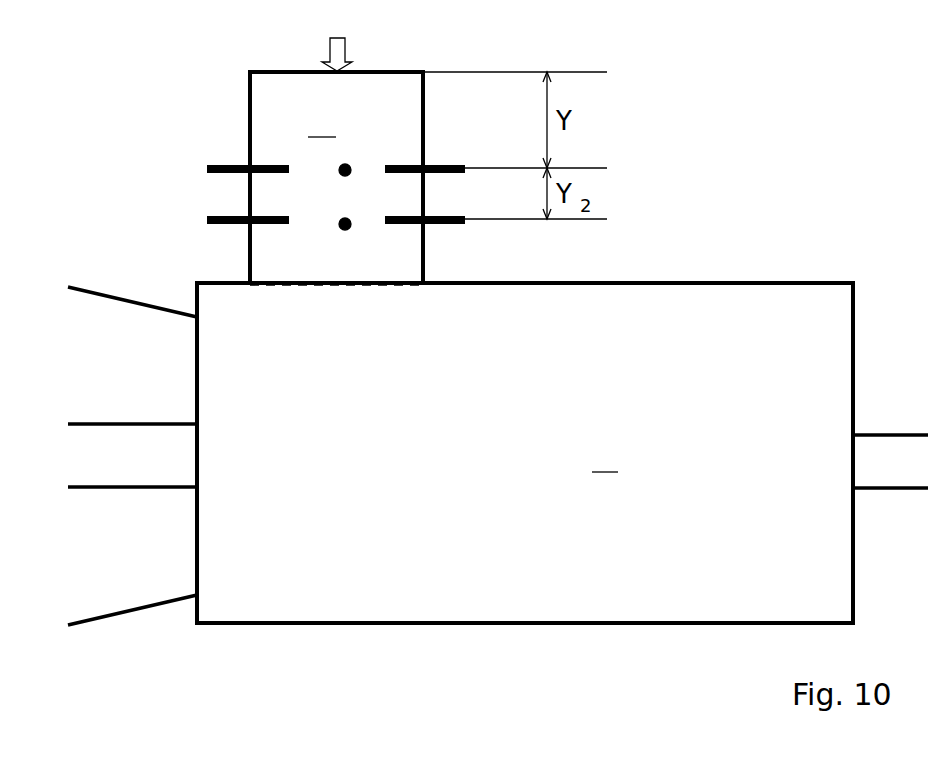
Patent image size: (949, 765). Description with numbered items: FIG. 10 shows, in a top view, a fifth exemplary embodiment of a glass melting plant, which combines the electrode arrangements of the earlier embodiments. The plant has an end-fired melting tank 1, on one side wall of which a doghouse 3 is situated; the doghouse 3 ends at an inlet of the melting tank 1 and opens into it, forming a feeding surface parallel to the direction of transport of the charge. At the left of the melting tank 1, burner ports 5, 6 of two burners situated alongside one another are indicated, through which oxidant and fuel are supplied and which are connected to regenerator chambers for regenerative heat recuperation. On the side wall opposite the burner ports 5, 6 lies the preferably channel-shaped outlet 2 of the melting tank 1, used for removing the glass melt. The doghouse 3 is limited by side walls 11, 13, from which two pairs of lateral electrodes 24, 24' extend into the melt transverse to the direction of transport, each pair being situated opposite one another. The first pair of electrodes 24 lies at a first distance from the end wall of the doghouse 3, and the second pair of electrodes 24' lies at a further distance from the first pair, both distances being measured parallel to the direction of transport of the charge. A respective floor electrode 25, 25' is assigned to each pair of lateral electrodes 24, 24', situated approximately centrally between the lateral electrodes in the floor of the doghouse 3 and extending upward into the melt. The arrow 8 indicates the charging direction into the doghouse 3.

The melting tank 1 is at (730, 276).
The outlet 2 is at (856, 440).
The doghouse 3 is at (246, 88).
The burner port 5 is at (197, 386).
The burner port 6 is at (197, 538).
The flow direction arrow 8 is at (347, 58).
The side wall 11 is at (249, 128).
The side wall 13 is at (425, 258).
The lateral electrodes 24 is at (355, 157).
The lateral electrodes 24' is at (355, 206).
The floor electrode 25 is at (404, 139).
The floor electrode 25' is at (246, 252).